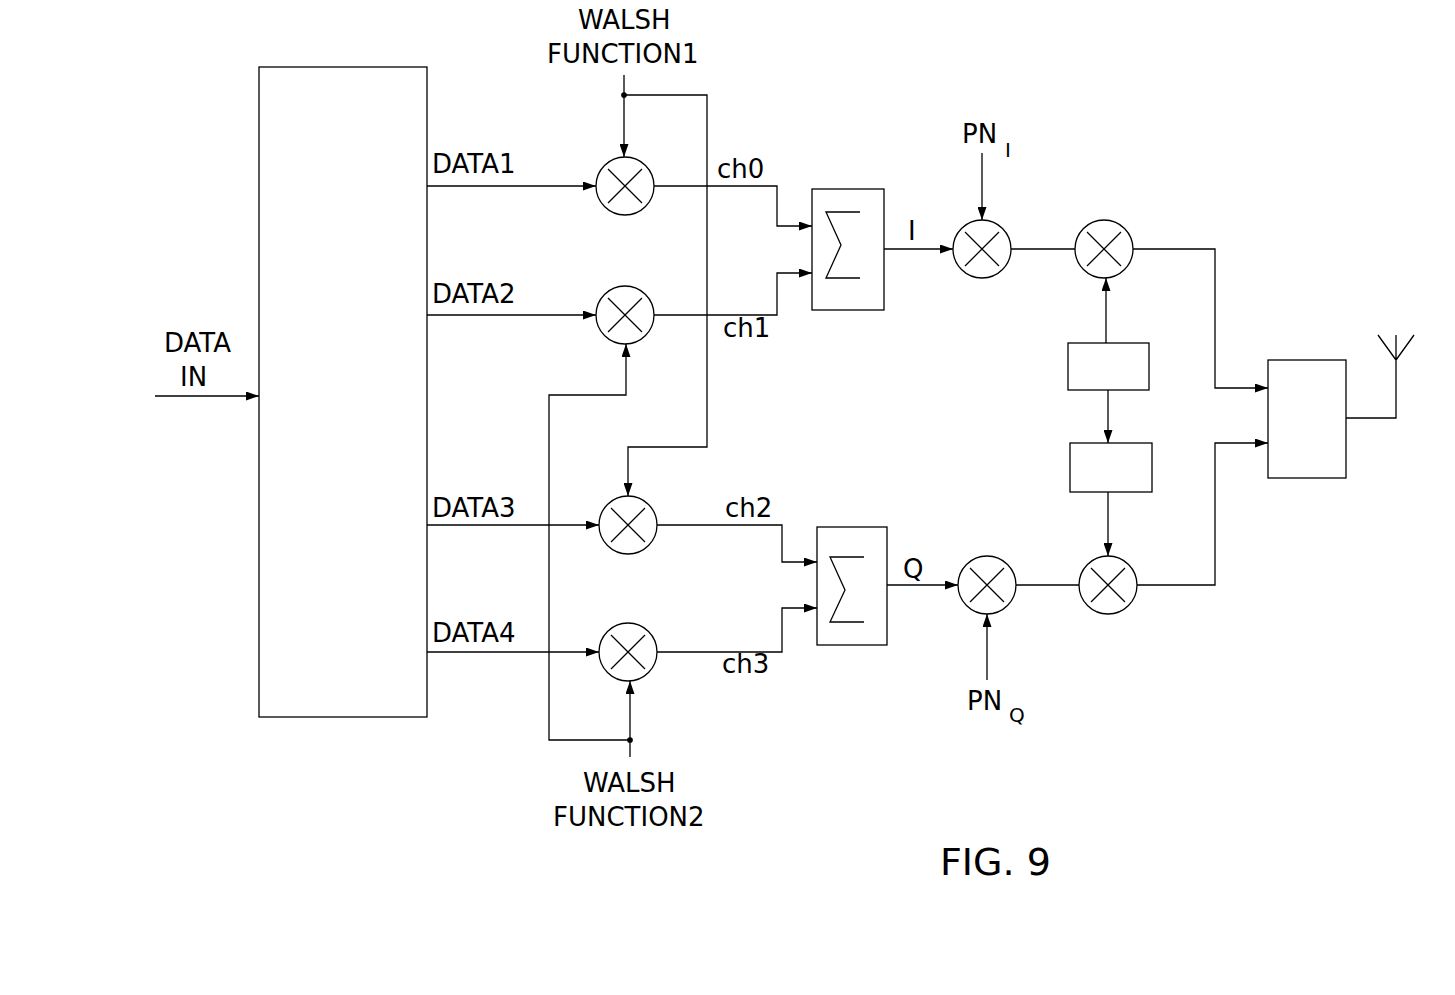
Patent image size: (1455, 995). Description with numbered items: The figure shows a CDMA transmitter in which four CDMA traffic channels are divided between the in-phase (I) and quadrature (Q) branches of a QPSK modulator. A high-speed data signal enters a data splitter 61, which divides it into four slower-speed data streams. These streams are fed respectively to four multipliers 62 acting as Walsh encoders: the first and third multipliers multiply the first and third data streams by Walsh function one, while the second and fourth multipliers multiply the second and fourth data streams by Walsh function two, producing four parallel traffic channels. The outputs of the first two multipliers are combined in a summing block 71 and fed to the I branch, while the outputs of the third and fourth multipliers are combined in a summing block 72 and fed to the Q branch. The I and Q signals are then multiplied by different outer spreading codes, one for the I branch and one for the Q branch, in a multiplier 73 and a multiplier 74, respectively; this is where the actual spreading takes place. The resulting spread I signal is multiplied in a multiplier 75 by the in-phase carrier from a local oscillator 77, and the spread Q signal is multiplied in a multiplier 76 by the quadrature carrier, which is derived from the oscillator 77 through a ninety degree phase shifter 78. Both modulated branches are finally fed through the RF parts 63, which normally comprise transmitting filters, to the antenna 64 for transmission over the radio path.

The data splitter 61 is at (336, 67).
The multipliers (Walsh encoders) 62 is at (668, 695).
The RF parts 63 is at (1311, 360).
The antenna 64 is at (1396, 410).
The summing block 71 is at (845, 189).
The summing block 72 is at (858, 527).
The multiplier 73 is at (993, 278).
The multiplier 74 is at (995, 557).
The multiplier 75 is at (1099, 220).
The multiplier 76 is at (1110, 614).
The local oscillator 77 is at (1068, 370).
The 90 degree phase shifter 78 is at (1070, 462).